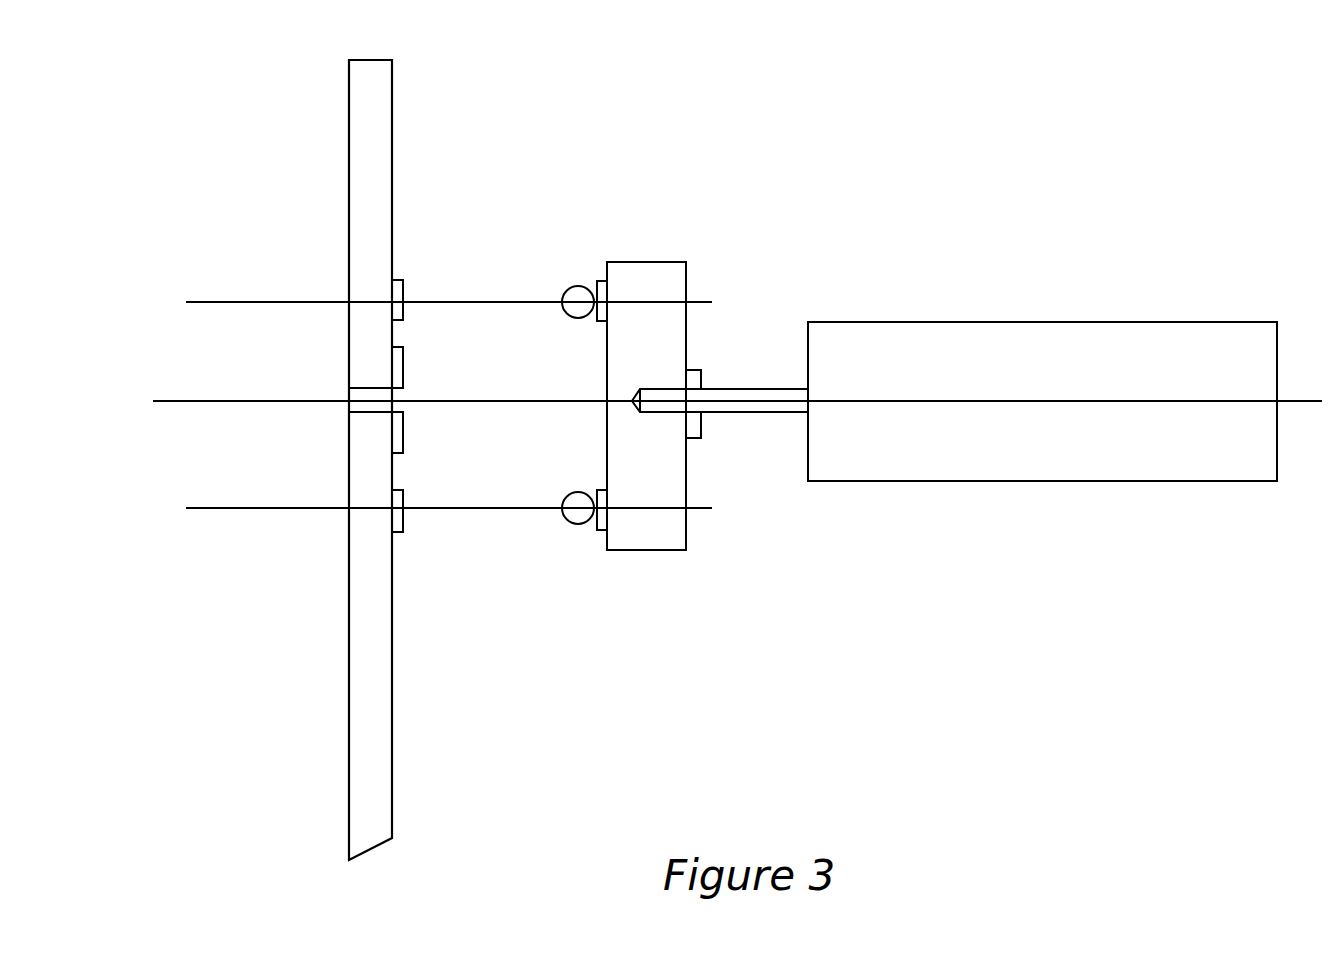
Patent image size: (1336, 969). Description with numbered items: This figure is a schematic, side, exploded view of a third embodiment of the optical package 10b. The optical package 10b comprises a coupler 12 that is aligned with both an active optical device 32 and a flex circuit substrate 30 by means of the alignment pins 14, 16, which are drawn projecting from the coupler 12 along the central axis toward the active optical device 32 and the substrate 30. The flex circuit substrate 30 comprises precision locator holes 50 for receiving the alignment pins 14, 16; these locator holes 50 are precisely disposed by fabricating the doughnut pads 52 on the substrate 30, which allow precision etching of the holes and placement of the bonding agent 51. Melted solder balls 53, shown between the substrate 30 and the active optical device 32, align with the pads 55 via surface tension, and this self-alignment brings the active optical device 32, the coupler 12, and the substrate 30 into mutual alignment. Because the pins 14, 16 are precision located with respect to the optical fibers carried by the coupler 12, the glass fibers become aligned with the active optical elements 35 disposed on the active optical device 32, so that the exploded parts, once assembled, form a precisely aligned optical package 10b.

The optical package 10b is at (1080, 151).
The coupler 12 is at (1090, 322).
The alignment pin 14 is at (744, 480).
The alignment pin 16 is at (725, 412).
The flex circuit substrate 30 is at (392, 135).
The active optical device 32 is at (635, 262).
The active optical elements 35 is at (703, 383).
The locator holes 50 is at (365, 409).
The bonding agent 51 is at (400, 455).
The doughnut pads 52 is at (403, 418).
The melted solder balls 53 is at (578, 318).
The pads 55 is at (403, 297).